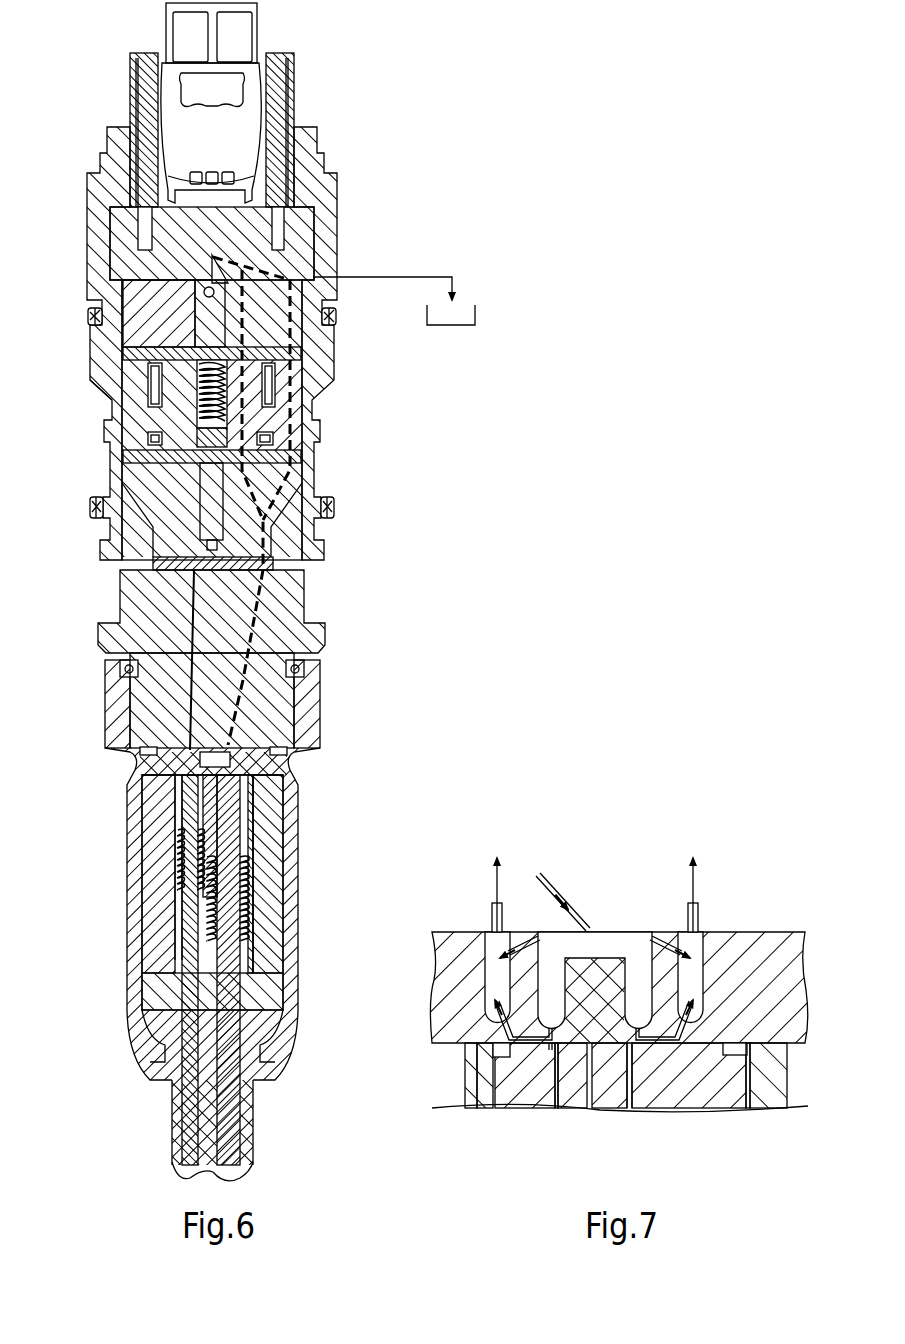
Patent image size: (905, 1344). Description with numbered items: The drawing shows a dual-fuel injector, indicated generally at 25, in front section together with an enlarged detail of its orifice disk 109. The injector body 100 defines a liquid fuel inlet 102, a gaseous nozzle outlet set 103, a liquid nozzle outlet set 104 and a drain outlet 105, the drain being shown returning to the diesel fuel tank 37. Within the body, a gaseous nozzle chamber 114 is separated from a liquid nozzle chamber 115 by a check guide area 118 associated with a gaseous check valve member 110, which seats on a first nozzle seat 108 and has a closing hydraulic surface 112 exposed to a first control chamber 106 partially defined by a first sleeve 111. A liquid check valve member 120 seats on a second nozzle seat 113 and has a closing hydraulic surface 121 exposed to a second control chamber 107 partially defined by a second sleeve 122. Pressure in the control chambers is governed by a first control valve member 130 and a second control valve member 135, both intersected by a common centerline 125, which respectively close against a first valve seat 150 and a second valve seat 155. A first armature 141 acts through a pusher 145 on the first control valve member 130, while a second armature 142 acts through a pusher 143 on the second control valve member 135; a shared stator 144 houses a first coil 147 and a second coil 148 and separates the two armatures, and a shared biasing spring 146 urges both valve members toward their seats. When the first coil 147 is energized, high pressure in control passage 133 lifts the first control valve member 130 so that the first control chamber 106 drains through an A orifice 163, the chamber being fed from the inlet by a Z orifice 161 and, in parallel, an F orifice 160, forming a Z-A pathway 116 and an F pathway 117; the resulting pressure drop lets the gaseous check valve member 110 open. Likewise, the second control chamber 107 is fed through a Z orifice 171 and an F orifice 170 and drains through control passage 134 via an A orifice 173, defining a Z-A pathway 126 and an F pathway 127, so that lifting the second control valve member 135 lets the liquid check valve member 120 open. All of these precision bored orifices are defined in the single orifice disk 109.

In FIG. 6, the fuel injector 25 is at (317, 77).
In FIG. 6, the diesel fuel tank 37 is at (476, 318).
In FIG. 6, the injector body 100 is at (87, 236).
In FIG. 7, the liquid fuel inlet 102 is at (542, 882).
In FIG. 6, the gaseous nozzle outlet set 103 is at (240, 1168).
In FIG. 6, the liquid nozzle outlet set 104 is at (185, 1168).
In FIG. 6, the drain outlet 105 is at (332, 280).
In FIG. 6, the first control chamber 106 is at (255, 788).
In FIG. 7, the first control chamber 106 is at (632, 1085).
In FIG. 6, the second control chamber 107 is at (190, 790).
In FIG. 7, the second control chamber 107 is at (558, 1090).
In FIG. 6, the first nozzle seat 108 is at (240, 1133).
In FIG. 6, the orifice disk 109 is at (152, 768).
In FIG. 7, the orifice disk 109 is at (796, 940).
In FIG. 6, the gaseous check valve member 110 is at (235, 850).
In FIG. 7, the gaseous check valve member 110 is at (706, 1100).
In FIG. 6, the first sleeve 111 is at (248, 818).
In FIG. 7, the first sleeve 111 is at (793, 1100).
In FIG. 6, the closing hydraulic surface 112 is at (287, 750).
In FIG. 7, the closing hydraulic surface 112 is at (750, 1065).
In FIG. 6, the second nozzle seat 113 is at (180, 1133).
In FIG. 6, the gaseous nozzle chamber 114 is at (268, 1073).
In FIG. 6, the liquid nozzle chamber 115 is at (163, 1068).
In FIG. 7, the Z-A pathway 116 is at (700, 1010).
In FIG. 7, the F pathway 117 is at (710, 917).
In FIG. 6, the check guide area 118 is at (245, 983).
In FIG. 6, the liquid check valve member 120 is at (172, 900).
In FIG. 7, the liquid check valve member 120 is at (512, 1100).
In FIG. 6, the closing hydraulic surface 121 is at (130, 752).
In FIG. 7, the closing hydraulic surface 121 is at (468, 1065).
In FIG. 6, the second sleeve 122 is at (178, 845).
In FIG. 7, the second sleeve 122 is at (470, 1088).
In FIG. 6, the common centerline 125 is at (112, 396).
In FIG. 7, the Z-A pathway 126 is at (495, 1005).
In FIG. 7, the F pathway 127 is at (480, 917).
In FIG. 6, the first control valve member 130 is at (95, 313).
In FIG. 6, the control passage 133 is at (270, 277).
In FIG. 7, the control passage 133 is at (697, 908).
In FIG. 6, the control passage 134 is at (195, 580).
In FIG. 7, the control passage 134 is at (492, 910).
In FIG. 6, the second control valve member 135 is at (200, 540).
In FIG. 6, the first armature 141 is at (125, 352).
In FIG. 6, the second armature 142 is at (285, 458).
In FIG. 6, the pusher 143 is at (160, 528).
In FIG. 6, the shared stator 144 is at (197, 400).
In FIG. 6, the pusher 145 is at (300, 356).
In FIG. 6, the shared biasing spring 146 is at (118, 440).
In FIG. 6, the first coil 147 is at (275, 395).
In FIG. 6, the second coil 148 is at (118, 462).
In FIG. 6, the first valve seat 150 is at (329, 320).
In FIG. 7, the first valve seat 150 is at (698, 875).
In FIG. 6, the second valve seat 155 is at (300, 532).
In FIG. 7, the second valve seat 155 is at (492, 875).
In FIG. 7, the F orifice 160 is at (666, 945).
In FIG. 7, the Z orifice 161 is at (643, 1033).
In FIG. 7, the A orifice 163 is at (696, 1030).
In FIG. 7, the F orifice 170 is at (521, 945).
In FIG. 7, the Z orifice 171 is at (558, 1046).
In FIG. 7, the A orifice 173 is at (500, 1030).